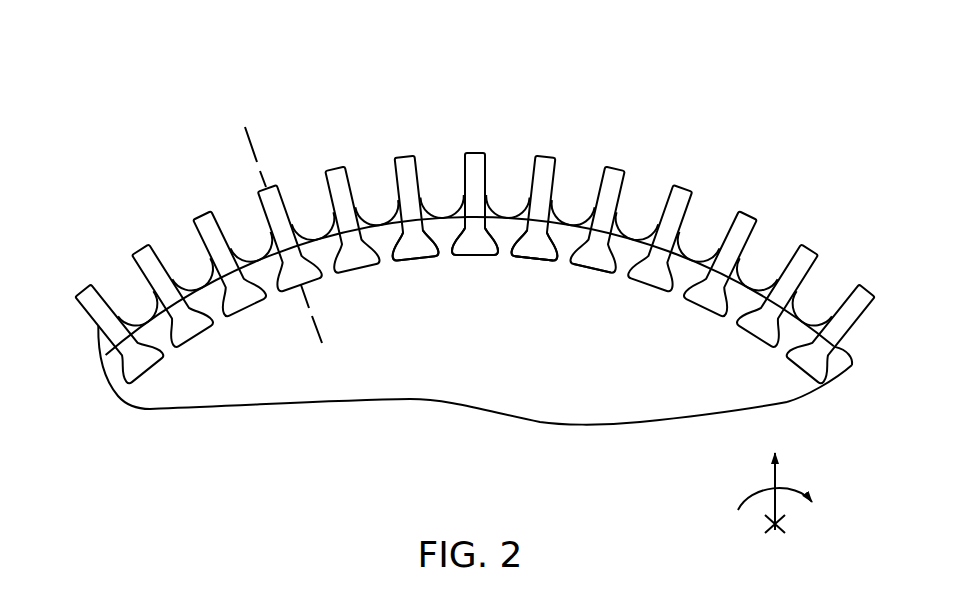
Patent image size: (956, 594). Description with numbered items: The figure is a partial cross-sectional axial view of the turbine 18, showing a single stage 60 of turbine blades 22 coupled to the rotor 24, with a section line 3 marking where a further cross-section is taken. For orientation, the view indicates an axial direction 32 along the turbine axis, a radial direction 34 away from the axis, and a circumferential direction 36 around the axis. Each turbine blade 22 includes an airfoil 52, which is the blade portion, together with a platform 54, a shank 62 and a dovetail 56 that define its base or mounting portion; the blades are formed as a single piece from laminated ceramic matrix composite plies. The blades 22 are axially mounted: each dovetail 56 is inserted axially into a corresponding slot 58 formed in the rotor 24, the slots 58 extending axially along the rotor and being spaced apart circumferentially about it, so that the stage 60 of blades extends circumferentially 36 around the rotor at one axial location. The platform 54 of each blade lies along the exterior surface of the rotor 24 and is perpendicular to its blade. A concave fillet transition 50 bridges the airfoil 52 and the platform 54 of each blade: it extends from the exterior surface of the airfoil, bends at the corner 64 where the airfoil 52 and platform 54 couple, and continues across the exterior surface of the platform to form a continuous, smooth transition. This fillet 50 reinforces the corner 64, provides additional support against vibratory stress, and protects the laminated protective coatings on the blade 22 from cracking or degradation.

The turbine 18 is at (475, 249).
The turbine blades 22 is at (475, 216).
The rotor 24 is at (461, 388).
The axial direction 32 is at (767, 518).
The radial direction 34 is at (778, 478).
The circumferential direction 36 is at (768, 492).
The concave fillet transition 50 is at (119, 305).
The airfoil 52 is at (865, 290).
The platform 54 is at (573, 222).
The dovetail 56 is at (428, 250).
The slot 58 is at (548, 268).
The stage 60 is at (95, 337).
The shank 62 is at (817, 353).
The corner 64 is at (843, 346).
The section line 3- 3 is at (245, 127).